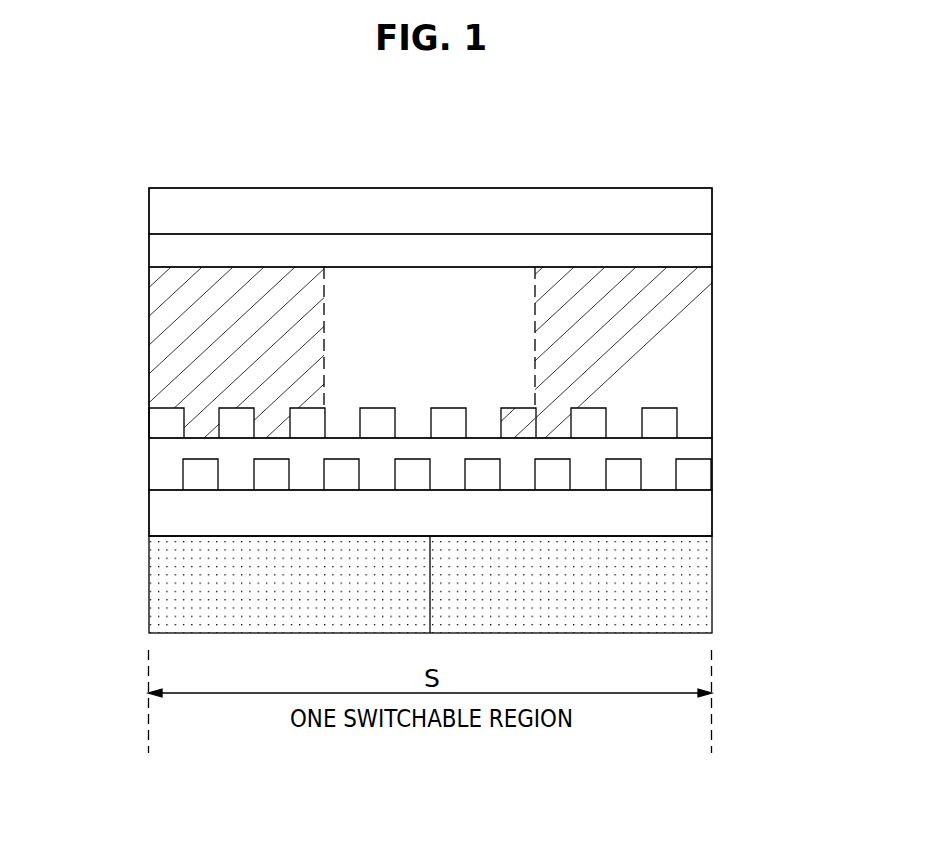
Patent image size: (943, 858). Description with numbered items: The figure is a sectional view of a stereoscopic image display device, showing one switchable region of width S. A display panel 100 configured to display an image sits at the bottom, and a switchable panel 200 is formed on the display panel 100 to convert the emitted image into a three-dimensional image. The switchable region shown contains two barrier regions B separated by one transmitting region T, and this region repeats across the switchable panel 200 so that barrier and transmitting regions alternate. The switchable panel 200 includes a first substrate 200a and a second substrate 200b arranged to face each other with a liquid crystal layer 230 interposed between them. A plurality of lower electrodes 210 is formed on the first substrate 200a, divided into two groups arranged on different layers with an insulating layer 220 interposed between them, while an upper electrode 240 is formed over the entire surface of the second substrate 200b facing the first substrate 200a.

The display panel 100 is at (123, 538).
The switchable panel 200 is at (123, 187).
The first substrate 200a is at (698, 512).
The second substrate 200b is at (698, 208).
The lower electrodes 210 is at (667, 422).
The insulating layer 220 is at (654, 480).
The liquid crystal layer 230 is at (712, 345).
The upper electrode 240 is at (698, 253).